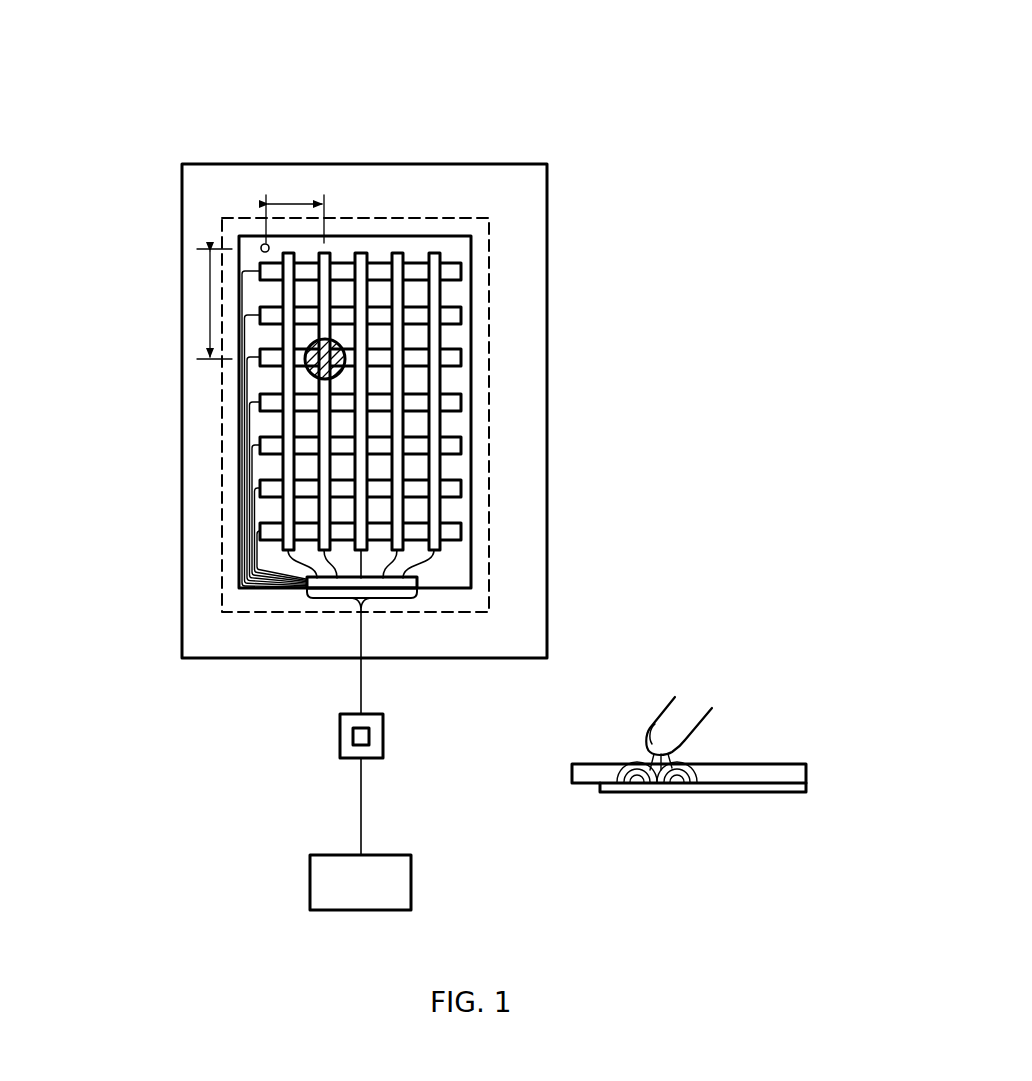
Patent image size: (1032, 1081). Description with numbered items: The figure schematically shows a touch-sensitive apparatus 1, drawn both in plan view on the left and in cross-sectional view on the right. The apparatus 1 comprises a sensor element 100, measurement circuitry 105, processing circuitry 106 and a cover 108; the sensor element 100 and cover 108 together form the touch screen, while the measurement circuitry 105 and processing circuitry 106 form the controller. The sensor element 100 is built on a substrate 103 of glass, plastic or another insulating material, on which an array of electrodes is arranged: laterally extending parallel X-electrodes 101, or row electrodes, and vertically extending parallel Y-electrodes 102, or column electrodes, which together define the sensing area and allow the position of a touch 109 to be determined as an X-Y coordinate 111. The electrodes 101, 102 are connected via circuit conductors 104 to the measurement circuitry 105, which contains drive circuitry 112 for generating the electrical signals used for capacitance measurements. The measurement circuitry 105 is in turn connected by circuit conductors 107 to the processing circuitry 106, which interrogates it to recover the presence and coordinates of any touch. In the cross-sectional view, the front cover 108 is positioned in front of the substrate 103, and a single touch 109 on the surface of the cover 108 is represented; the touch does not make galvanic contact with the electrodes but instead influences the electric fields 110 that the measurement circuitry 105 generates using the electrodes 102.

The touch-sensitive apparatus 1 is at (738, 75).
The sensor element 100 is at (490, 380).
The X-electrodes 101 is at (462, 272).
The Y-electrodes 102 is at (366, 254).
The substrate 103 is at (472, 537).
The circuit conductors 104 is at (358, 692).
The measurement circuitry 105 is at (340, 742).
The processing circuitry 106 is at (310, 890).
The circuit conductors 107 is at (360, 803).
The cover 108 is at (525, 163).
The touch 109 is at (309, 371).
The electric fields 110 is at (617, 771).
The X-Y coordinate 111 is at (290, 184).
The drive circuitry 112 is at (370, 736).